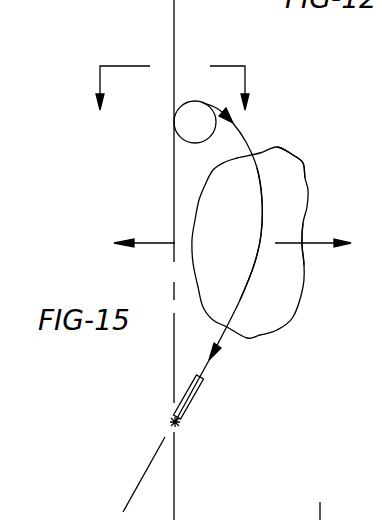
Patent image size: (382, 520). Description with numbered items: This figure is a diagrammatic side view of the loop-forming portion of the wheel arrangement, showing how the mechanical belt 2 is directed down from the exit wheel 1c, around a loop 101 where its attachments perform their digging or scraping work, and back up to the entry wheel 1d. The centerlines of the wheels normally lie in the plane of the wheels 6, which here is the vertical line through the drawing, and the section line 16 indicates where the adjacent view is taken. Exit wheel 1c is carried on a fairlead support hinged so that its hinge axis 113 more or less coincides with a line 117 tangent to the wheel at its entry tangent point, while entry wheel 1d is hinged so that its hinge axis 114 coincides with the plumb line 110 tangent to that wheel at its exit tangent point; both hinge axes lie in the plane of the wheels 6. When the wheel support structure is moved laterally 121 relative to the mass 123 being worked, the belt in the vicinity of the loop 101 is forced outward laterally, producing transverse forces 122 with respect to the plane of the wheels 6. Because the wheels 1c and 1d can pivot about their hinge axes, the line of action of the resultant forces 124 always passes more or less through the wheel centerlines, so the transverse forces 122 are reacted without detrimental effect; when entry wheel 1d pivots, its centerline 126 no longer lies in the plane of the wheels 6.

The plane of the wheels 6 is at (222, 260).
The hinge axis 113 is at (222, 260).
The line tangent to the wheel 117 is at (175, 58).
The line 16 is at (181, 96).
The exit wheel 1c is at (188, 146).
The resultant forces 124 is at (233, 126).
The loop 101 is at (260, 207).
The mass 123 is at (303, 165).
The transverse forces 122 is at (305, 238).
The lateral movement 121 is at (163, 243).
The mechanical belt 2 is at (253, 270).
The entry wheel 1d is at (193, 398).
The hinge axis 114 is at (217, 431).
The plumb line 110 is at (180, 424).
The centerline of wheel 1d 126 is at (143, 482).